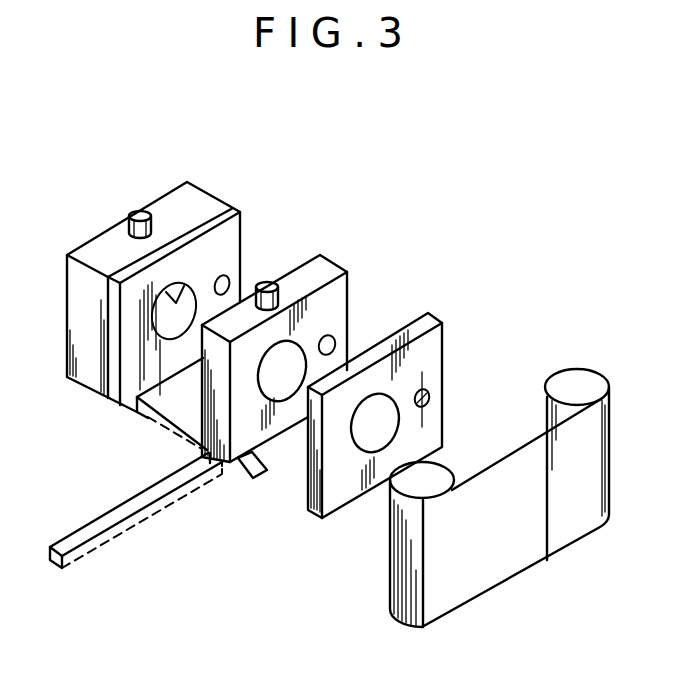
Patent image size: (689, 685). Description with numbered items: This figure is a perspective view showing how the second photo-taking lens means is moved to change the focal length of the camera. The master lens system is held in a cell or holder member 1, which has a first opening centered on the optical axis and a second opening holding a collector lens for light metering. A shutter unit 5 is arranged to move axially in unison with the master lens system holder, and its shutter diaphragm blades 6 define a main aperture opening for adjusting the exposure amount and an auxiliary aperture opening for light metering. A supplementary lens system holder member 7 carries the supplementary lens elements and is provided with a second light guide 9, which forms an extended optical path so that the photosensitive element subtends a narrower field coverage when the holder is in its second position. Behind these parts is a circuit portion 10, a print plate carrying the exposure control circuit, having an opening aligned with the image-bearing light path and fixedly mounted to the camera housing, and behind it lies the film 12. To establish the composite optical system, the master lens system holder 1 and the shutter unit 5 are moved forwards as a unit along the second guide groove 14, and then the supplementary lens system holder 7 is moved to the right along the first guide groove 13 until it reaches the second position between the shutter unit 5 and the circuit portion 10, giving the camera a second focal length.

The master lens system holder member 1 is at (185, 192).
The shutter unit 5 is at (233, 212).
The shutter diaphragm blades 6 is at (190, 288).
The supplementary lens system holder member 7 is at (325, 268).
The second light guide 9 is at (334, 339).
The circuit portion 10 is at (435, 322).
The film 12 is at (531, 453).
The first guide groove 13 is at (168, 494).
The second guide groove 14 is at (140, 416).